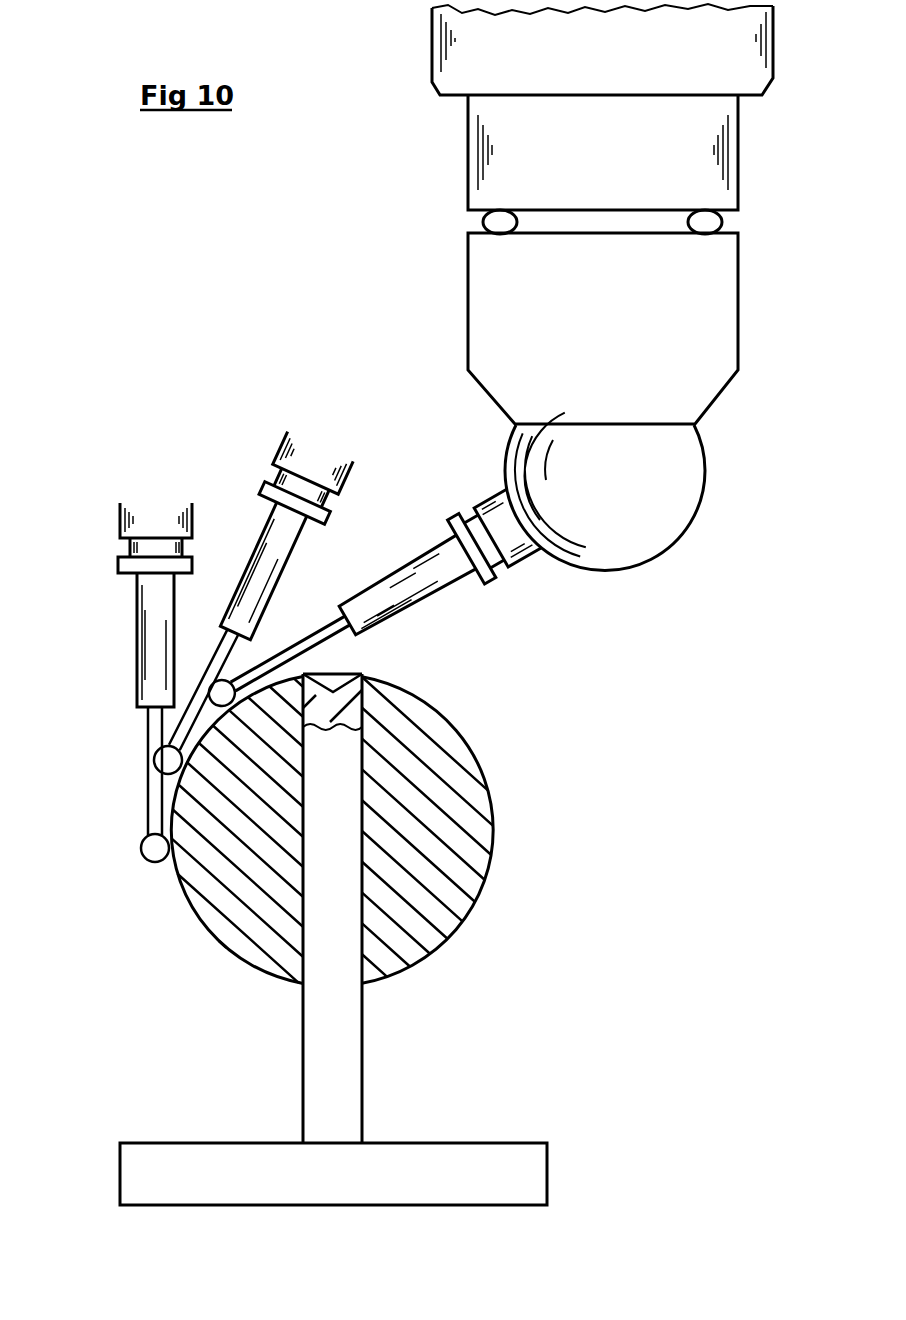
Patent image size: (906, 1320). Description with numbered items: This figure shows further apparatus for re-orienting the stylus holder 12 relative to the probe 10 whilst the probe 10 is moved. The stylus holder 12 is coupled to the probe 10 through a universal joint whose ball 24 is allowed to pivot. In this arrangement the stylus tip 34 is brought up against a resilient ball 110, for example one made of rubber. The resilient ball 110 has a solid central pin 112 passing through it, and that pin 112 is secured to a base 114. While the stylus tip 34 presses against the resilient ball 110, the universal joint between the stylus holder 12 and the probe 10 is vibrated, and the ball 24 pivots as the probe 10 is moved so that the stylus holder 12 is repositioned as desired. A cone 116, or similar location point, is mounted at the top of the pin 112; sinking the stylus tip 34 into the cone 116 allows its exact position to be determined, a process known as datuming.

The probe 10 is at (513, 330).
The ball 24 is at (643, 523).
The stylus holder 12 is at (415, 613).
The stylus tip 34 is at (220, 697).
The resilient ball 110 is at (465, 800).
The central pin 112 is at (343, 1043).
The base 114 is at (510, 1160).
The cone 116 is at (332, 673).